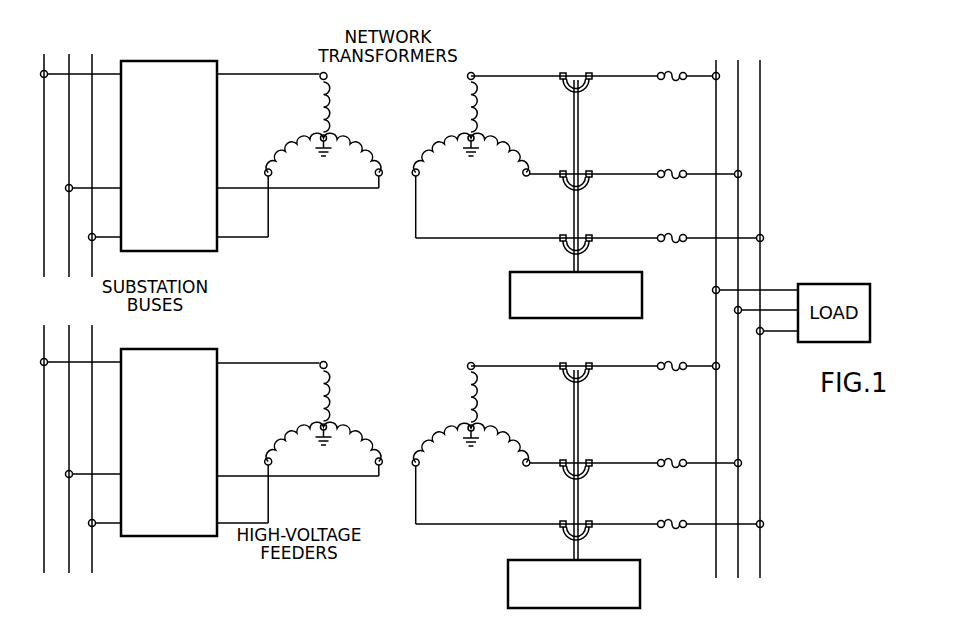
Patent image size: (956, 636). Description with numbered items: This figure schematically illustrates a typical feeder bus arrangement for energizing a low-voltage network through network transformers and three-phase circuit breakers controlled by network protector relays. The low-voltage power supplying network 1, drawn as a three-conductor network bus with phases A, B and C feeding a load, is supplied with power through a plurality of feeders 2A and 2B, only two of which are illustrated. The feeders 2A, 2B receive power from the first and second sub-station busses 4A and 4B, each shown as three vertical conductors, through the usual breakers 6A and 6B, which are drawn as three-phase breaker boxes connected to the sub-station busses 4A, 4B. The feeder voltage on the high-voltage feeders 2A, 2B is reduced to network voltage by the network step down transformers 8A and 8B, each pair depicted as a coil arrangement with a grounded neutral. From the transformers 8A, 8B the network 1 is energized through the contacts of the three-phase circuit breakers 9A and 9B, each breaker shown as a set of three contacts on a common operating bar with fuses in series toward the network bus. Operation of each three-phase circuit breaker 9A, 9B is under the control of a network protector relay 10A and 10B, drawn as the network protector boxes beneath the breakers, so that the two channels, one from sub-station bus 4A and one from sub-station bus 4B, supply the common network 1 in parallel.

The low-voltage power supplying network 1 is at (713, 581).
The feeder 2A is at (254, 136).
The feeder 2B is at (254, 424).
The first sub-station bus 4A is at (67, 50).
The second sub-station bus 4B is at (67, 322).
The breaker 6A is at (196, 61).
The breaker 6B is at (196, 349).
The network step down transformer 8A is at (400, 130).
The network step down transformer 8B is at (400, 407).
The three-phase circuit breaker 9A is at (580, 142).
The three-phase circuit breaker 9B is at (580, 422).
The network protector relay 10A is at (510, 288).
The network protector relay 10B is at (508, 576).